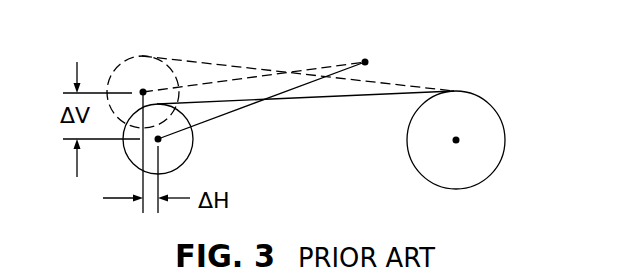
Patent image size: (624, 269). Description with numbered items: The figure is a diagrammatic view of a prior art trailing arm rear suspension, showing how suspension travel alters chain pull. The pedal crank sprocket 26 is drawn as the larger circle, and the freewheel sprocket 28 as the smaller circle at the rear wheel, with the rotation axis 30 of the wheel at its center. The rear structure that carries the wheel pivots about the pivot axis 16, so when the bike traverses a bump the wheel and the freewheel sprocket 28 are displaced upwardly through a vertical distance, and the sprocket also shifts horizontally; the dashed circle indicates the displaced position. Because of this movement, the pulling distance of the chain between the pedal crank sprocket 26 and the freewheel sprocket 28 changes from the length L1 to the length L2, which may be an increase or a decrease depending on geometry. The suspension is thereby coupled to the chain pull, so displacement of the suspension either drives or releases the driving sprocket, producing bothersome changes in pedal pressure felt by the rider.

The pivot axis 16 is at (368, 61).
The pedal crank sprocket 26 is at (493, 145).
The freewheel sprocket 28 is at (128, 158).
The rotation axis 30 is at (160, 140).
The length L1 is at (352, 98).
The length L2 is at (263, 67).